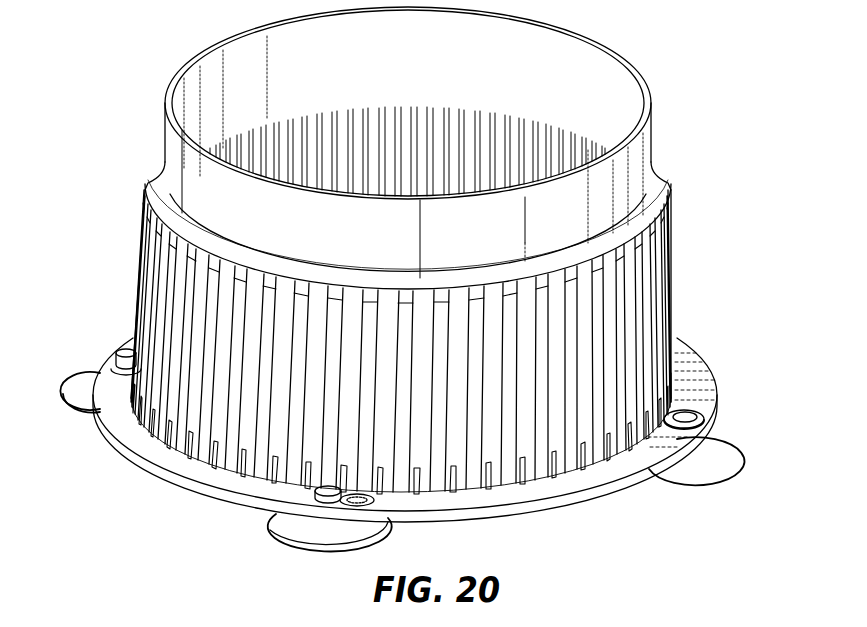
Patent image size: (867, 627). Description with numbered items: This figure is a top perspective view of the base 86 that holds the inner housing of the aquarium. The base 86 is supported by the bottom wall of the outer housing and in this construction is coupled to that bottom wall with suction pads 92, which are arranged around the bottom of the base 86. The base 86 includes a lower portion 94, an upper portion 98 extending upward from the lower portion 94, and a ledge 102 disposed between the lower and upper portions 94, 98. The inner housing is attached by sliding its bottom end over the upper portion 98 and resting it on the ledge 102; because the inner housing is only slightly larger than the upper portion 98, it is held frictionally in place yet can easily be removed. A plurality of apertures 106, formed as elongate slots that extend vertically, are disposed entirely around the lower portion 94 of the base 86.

The base 86 is at (130, 75).
The suction pads 92 is at (78, 385).
The lower portion 94 is at (528, 420).
The upper portion 98 is at (172, 128).
The ledge 102 is at (160, 183).
The apertures 106 is at (263, 408).